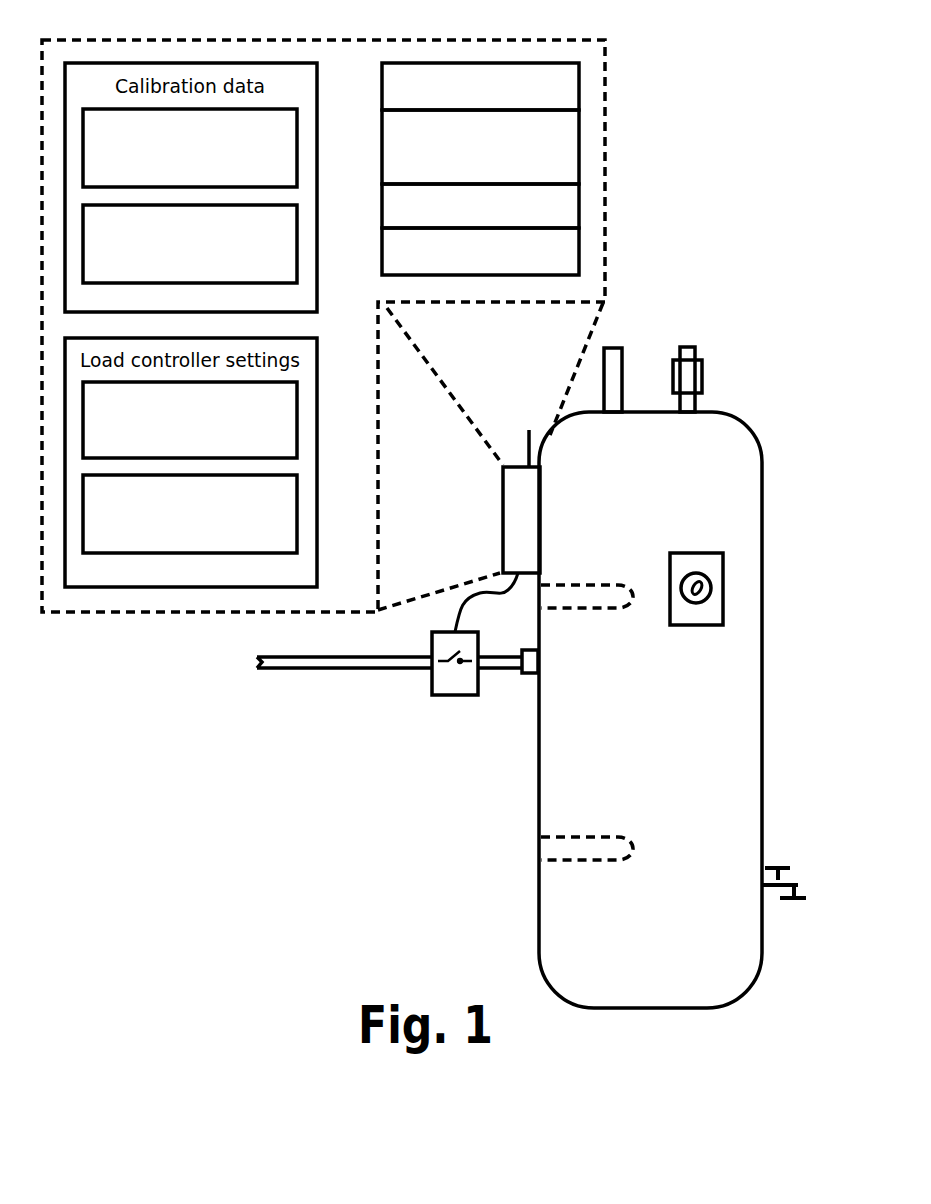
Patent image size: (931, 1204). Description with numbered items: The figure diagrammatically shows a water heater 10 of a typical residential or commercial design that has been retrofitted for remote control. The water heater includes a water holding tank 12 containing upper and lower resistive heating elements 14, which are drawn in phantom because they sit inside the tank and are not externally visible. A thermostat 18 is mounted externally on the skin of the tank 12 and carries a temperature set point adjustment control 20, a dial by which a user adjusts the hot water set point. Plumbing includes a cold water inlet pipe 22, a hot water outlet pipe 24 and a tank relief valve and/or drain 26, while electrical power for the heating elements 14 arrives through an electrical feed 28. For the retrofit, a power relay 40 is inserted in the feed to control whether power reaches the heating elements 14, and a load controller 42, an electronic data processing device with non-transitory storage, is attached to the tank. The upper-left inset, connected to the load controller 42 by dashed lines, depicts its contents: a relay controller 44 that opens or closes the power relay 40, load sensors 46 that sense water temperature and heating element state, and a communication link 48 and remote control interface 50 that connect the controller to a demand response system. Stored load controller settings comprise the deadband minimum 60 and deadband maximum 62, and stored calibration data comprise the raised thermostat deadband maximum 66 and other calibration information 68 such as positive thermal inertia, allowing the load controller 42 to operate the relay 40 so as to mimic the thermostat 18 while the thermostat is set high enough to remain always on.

The water heater 10 is at (447, 810).
The water holding tank 12 is at (538, 772).
The heating elements 14 is at (590, 608).
The thermostat 18 is at (690, 553).
The temperature set point adjustment control 20 is at (693, 600).
The cold water inlet pipe 22 is at (623, 372).
The hot water outlet pipe 24 is at (702, 376).
The tank relief valve and/or drain 26 is at (796, 880).
The electrical feed 28 is at (498, 672).
The power relay 40 is at (448, 695).
The load controller 42 is at (503, 520).
The relay controller 44 is at (579, 247).
The load sensors 46 is at (579, 203).
The communication link 48 is at (579, 90).
The remote control interface 50 is at (579, 147).
The deadband minimum 60 is at (297, 517).
The deadband maximum 62 is at (297, 410).
The raised thermostat deadband maximum 66 is at (295, 130).
The other calibration information 68 is at (295, 232).